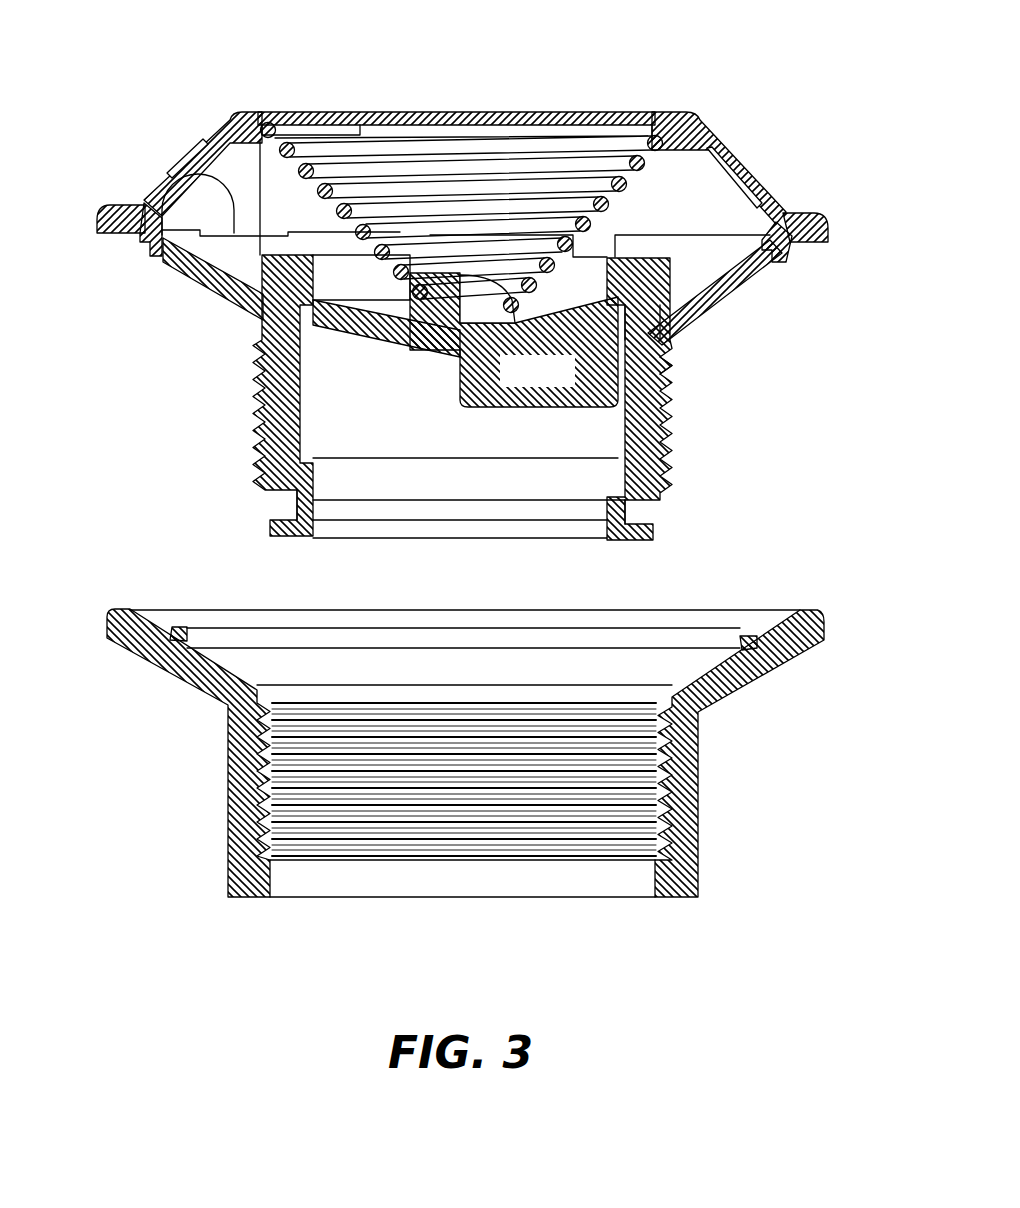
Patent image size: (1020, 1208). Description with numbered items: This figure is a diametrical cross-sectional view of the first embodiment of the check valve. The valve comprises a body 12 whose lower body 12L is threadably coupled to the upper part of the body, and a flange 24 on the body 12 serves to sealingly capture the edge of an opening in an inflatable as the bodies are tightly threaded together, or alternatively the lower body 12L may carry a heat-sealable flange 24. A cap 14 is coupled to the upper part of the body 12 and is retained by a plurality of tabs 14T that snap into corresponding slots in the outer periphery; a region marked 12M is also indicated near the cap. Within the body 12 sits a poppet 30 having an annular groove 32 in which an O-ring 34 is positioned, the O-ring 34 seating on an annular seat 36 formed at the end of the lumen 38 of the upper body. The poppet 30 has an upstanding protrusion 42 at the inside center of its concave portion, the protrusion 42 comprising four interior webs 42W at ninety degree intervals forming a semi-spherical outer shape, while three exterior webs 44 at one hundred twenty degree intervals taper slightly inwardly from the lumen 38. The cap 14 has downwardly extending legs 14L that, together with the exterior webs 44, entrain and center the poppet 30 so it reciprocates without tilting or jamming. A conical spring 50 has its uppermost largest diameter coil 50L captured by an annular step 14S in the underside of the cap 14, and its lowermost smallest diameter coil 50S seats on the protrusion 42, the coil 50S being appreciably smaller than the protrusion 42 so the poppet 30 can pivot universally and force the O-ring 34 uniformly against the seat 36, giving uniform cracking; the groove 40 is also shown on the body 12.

The body 12 is at (820, 212).
The lower body 12L is at (770, 627).
The mating portion of closure 12M is at (712, 302).
The cap 14 is at (763, 177).
The annular step 14S is at (258, 112).
The tabs 14T is at (140, 250).
The legs 14L is at (240, 240).
The flange 24 is at (747, 713).
The poppet 30 is at (263, 407).
The annular groove 32 is at (222, 292).
The O-ring 34 is at (338, 336).
The annular seat 36 is at (660, 330).
The lumen 38 is at (667, 425).
The groove 40 is at (660, 373).
The protrusion 42 is at (427, 395).
The interior webs 42W is at (465, 345).
The exterior webs 44 is at (450, 408).
The conical spring 50 is at (580, 143).
The uppermost largest diameter coil 50L is at (282, 112).
The lowermost smallest diameter coil 50S is at (400, 340).